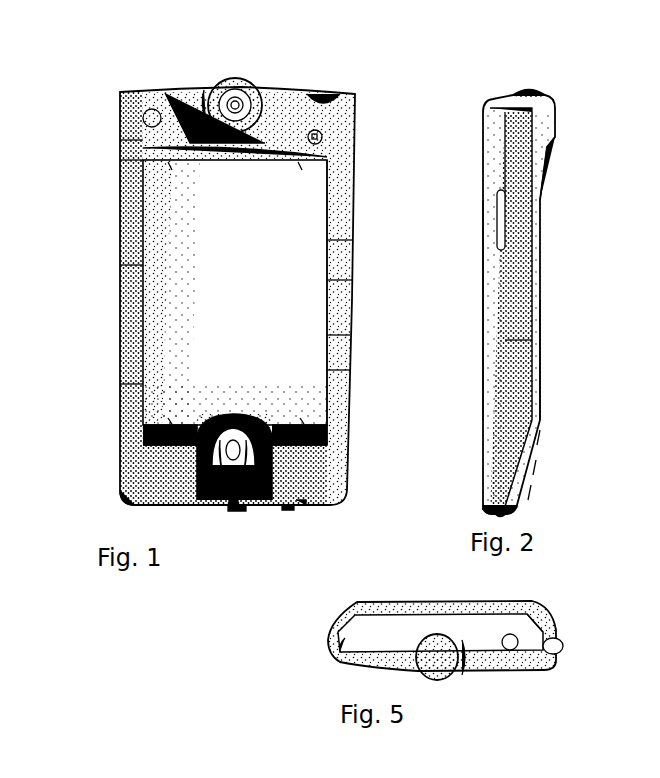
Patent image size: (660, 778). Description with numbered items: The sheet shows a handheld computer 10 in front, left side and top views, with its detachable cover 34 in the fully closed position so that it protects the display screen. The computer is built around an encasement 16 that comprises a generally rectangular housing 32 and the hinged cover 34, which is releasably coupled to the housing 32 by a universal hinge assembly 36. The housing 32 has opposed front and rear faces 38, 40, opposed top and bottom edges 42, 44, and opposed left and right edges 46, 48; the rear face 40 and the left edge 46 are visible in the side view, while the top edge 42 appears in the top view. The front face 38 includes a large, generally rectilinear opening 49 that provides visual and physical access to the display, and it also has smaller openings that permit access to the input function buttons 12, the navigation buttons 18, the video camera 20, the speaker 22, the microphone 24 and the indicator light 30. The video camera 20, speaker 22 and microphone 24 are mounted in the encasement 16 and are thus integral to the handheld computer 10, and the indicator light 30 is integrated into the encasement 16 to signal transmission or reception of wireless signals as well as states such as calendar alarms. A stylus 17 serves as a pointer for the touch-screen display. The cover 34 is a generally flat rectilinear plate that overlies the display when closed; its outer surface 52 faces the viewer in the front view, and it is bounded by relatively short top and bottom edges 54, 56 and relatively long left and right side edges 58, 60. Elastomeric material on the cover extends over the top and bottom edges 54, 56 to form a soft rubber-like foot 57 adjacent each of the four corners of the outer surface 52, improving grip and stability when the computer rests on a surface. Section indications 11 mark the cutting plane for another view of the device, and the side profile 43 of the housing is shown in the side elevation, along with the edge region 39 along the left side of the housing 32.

In FIG. 1, the handheld computer 10 is at (323, 45).
In FIG. 2, the handheld computer 10 is at (585, 54).
In FIG. 5, the handheld computer 10 is at (552, 708).
In FIG. 1, the section line 11 is at (204, 505).
In FIG. 1, the input function buttons 12 is at (122, 478).
In FIG. 1, the encasement 16 is at (352, 280).
In FIG. 1, the stylus 17 is at (356, 104).
In FIG. 5, the stylus 17 is at (563, 650).
In FIG. 1, the navigation buttons 18 is at (302, 506).
In FIG. 1, the video camera 20 is at (239, 71).
In FIG. 2, the video camera 20 is at (530, 80).
In FIG. 5, the video camera 20 is at (456, 692).
In FIG. 1, the speaker 22 is at (186, 92).
In FIG. 1, the microphone 24 is at (288, 508).
In FIG. 1, the indicator light 30 is at (259, 100).
In FIG. 1, the housing 32 is at (357, 212).
In FIG. 2, the housing 32 is at (552, 253).
In FIG. 1, the hinged cover 34 is at (337, 342).
In FIG. 1, the universal hinge assembly 36 is at (241, 529).
In FIG. 2, the universal hinge assembly 36 is at (538, 520).
In FIG. 2, the front face 38 is at (541, 312).
In FIG. 1, the side edge 39 is at (118, 263).
In FIG. 2, the rear face 40 is at (480, 334).
In FIG. 1, the top edge 42 is at (150, 92).
In FIG. 2, the top edge 42 is at (500, 100).
In FIG. 5, the top edge 42 is at (556, 624).
In FIG. 2, the side surface 43 is at (659, 300).
In FIG. 1, the bottom edge 44 is at (162, 503).
In FIG. 2, the bottom edge 44 is at (483, 513).
In FIG. 1, the left edge 46 is at (118, 215).
In FIG. 2, the left edge 46 is at (527, 353).
In FIG. 5, the left edge 46 is at (328, 637).
In FIG. 1, the right edge 48 is at (348, 163).
In FIG. 5, the right edge 48 is at (550, 614).
In FIG. 1, the opening 49 is at (322, 243).
In FIG. 1, the outer surface 52 is at (235, 292).
In FIG. 1, the top edge 54 is at (118, 150).
In FIG. 1, the bottom edge 56 is at (122, 441).
In FIG. 1, the foot 57 is at (176, 175).
In FIG. 1, the left side edge 58 is at (118, 384).
In FIG. 1, the right side edge 60 is at (350, 372).